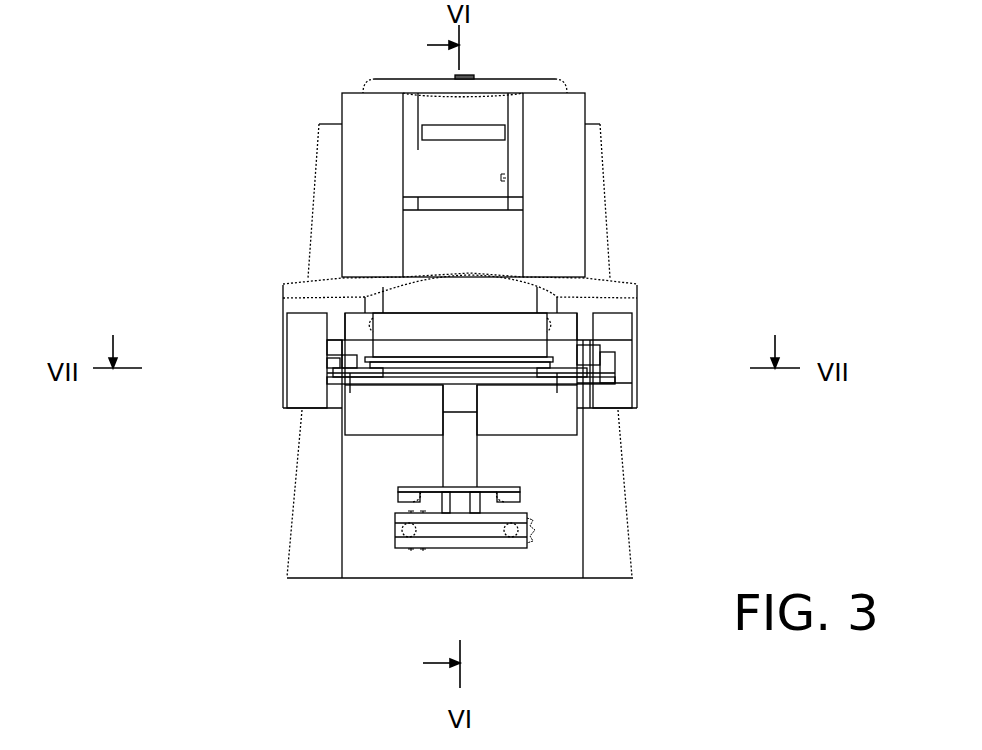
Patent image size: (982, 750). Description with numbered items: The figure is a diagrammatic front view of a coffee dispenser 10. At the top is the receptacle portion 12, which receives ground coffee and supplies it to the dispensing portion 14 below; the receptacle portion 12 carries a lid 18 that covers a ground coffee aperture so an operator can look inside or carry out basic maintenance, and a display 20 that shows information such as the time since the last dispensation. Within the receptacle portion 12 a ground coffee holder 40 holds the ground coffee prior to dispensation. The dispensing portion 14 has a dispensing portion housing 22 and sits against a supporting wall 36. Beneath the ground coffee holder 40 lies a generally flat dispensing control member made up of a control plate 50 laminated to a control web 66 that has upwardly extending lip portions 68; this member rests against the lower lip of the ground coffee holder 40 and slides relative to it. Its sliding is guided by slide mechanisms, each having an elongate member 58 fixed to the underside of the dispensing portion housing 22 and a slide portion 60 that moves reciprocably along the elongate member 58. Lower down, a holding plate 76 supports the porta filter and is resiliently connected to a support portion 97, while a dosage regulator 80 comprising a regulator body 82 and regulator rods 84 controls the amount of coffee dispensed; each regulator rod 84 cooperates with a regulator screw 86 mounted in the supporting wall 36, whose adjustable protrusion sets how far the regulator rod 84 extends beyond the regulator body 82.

The coffee dispenser 10 is at (700, 140).
The receptacle portion 12 is at (601, 86).
The dispensing portion 14 is at (262, 324).
The lid 18 is at (500, 85).
The display 20 is at (475, 136).
The dispensing portion housing 22 is at (617, 307).
The supporting wall 36 is at (315, 510).
The ground coffee holder 40 is at (403, 332).
The control plate 50 is at (397, 387).
The elongate member 58 is at (330, 350).
The slide portion 60 is at (603, 370).
The control web 66 is at (430, 372).
The lip portions 68 is at (560, 375).
The holding plate 76 is at (517, 492).
The dosage regulator 80 is at (464, 556).
The regulator body 82 is at (440, 533).
The regulator rod 84 is at (402, 530).
The regulator screw 86 is at (403, 512).
The support portion 97 is at (370, 323).